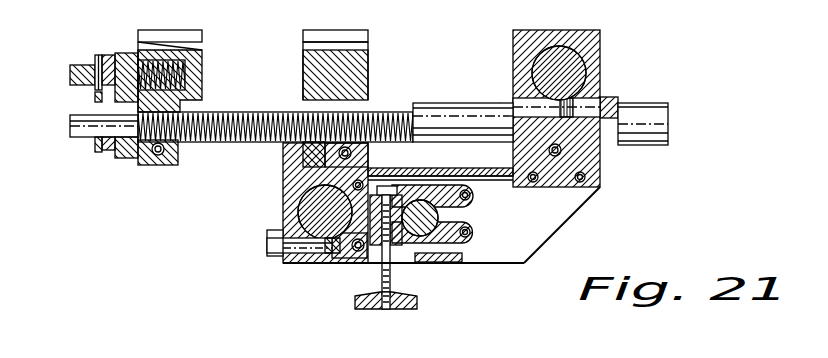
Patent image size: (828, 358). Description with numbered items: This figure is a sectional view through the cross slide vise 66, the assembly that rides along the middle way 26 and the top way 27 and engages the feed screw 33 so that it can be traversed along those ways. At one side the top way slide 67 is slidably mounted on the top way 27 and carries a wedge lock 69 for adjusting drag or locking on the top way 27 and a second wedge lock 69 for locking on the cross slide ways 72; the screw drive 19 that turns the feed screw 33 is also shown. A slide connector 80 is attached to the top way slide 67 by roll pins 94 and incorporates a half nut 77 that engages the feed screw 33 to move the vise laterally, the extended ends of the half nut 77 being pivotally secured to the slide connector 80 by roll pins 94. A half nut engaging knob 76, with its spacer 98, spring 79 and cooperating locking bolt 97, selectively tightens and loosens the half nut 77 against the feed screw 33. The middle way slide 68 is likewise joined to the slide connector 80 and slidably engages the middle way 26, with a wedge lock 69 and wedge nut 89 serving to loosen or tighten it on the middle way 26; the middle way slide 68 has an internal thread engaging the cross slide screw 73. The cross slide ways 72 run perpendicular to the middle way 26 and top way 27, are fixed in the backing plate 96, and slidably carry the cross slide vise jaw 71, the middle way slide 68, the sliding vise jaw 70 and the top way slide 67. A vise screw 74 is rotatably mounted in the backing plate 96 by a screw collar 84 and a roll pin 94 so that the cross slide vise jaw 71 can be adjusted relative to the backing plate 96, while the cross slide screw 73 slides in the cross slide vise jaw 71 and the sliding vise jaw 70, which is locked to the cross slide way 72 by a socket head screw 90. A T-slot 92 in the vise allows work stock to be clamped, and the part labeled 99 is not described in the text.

The screw drive 19 is at (70, 75).
The middle way 26 is at (298, 210).
The top way 27 is at (586, 72).
The feed screw 33 is at (430, 236).
The cross slide vise 66 is at (452, 80).
The top way slide 67 is at (560, 42).
The middle way slide 68 is at (283, 152).
The wedge lock 69 is at (270, 246).
The sliding vise jaw 70 is at (368, 68).
The cross slide vise jaw 71 is at (184, 60).
The cross slide way 72 is at (668, 120).
The cross slide screw 73 is at (250, 112).
The vise screw 74 is at (190, 82).
The half nut engaging knob 76 is at (355, 304).
The half nut 77 is at (482, 185).
The spring 79 is at (440, 178).
The slide connector 80 is at (560, 228).
The screw collar 84 is at (95, 83).
The wedge nut 89 is at (322, 256).
The socket head screw 90 is at (158, 165).
The T-slot 92 is at (172, 40).
The roll pin 94 is at (110, 56).
The backing plate 96 is at (125, 158).
The locking bolt 97 is at (408, 178).
The spacer 98 is at (396, 264).
The base 99 is at (482, 264).